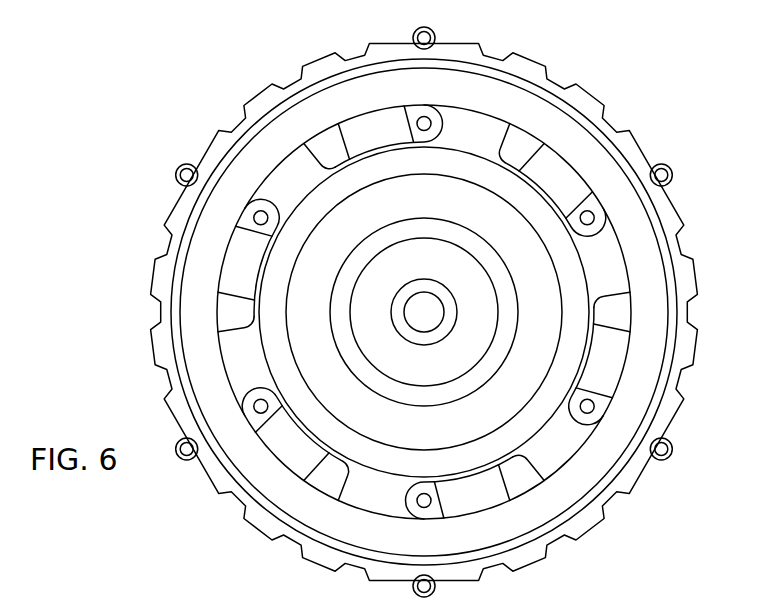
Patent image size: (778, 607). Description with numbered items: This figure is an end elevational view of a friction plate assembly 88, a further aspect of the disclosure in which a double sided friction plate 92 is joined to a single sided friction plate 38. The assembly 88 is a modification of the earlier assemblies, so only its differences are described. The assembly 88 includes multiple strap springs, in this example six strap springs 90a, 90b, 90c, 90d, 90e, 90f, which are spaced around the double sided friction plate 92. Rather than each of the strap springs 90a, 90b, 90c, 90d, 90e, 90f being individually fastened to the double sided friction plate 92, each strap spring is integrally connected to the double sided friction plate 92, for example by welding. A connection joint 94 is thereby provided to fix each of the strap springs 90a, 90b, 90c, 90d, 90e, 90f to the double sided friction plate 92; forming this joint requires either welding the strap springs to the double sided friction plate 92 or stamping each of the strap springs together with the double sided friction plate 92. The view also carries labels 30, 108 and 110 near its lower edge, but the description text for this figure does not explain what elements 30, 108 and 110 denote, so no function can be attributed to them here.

The assembly 88 is at (638, 80).
The single sided friction plate 38 is at (668, 207).
The double sided friction plate 92 is at (627, 253).
The connection joint 94 is at (623, 310).
The strap spring 90a is at (610, 358).
The strap spring 90b is at (490, 490).
The strap spring 90c is at (293, 450).
The strap spring 90d is at (247, 253).
The strap spring 90e is at (355, 127).
The strap spring 90f is at (575, 193).
The housing 30 is at (191, 601).
The fastener 108 is at (279, 601).
The opening 110 is at (323, 601).